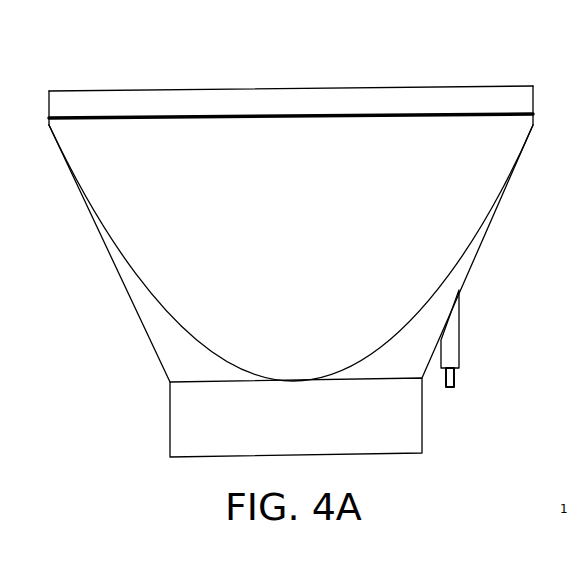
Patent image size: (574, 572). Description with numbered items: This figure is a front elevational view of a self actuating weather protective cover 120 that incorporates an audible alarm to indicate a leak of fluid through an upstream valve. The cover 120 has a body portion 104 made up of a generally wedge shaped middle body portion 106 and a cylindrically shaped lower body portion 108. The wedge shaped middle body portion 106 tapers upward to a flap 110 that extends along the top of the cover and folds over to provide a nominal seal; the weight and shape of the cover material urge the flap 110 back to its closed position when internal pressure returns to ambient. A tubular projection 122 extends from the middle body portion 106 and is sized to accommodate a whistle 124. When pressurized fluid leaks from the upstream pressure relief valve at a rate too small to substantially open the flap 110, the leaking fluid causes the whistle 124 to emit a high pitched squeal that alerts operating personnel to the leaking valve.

The protective cover 120 is at (248, 93).
The flap 110 is at (443, 93).
The body portion 104 is at (158, 338).
The middle body portion 106 is at (433, 228).
The lower body portion 108 is at (388, 419).
The tubular projection 122 is at (449, 335).
The whistle 124 is at (455, 377).